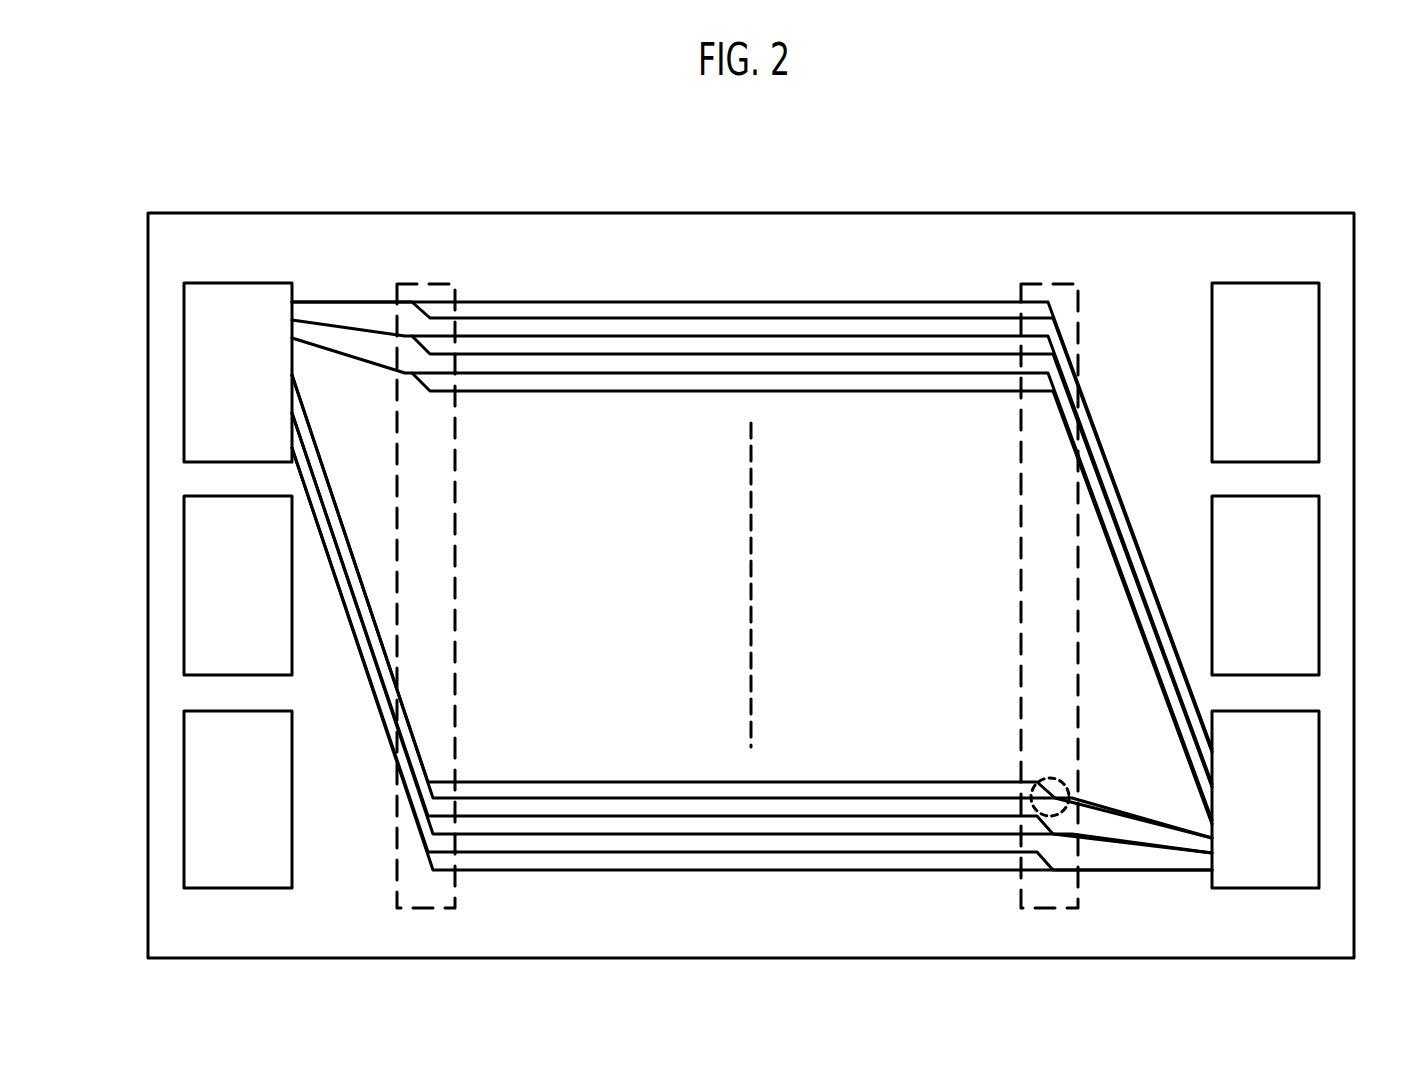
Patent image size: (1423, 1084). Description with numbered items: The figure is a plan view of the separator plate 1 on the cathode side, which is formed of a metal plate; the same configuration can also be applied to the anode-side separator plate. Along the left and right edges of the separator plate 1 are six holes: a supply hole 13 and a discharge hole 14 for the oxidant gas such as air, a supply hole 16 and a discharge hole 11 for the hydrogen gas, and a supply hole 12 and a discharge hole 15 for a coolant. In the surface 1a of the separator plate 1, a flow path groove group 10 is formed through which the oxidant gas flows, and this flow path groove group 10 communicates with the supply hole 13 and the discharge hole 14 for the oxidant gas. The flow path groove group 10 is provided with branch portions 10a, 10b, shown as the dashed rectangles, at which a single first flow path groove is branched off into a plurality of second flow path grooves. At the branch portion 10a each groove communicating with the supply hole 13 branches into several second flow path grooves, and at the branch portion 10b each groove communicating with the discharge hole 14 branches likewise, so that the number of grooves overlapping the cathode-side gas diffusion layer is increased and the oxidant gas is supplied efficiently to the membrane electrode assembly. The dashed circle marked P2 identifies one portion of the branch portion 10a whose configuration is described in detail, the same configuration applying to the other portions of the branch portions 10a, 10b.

The separator plate 1 is at (1283, 213).
The surface 1a is at (727, 599).
The flow path groove group 10 is at (862, 280).
The branch portion 10a is at (1048, 284).
The branch portion 10b is at (433, 285).
The discharge hole 11 is at (1319, 353).
The supply hole 12 is at (1320, 566).
The supply hole 13 is at (1320, 778).
The discharge hole 14 is at (185, 353).
The discharge hole 15 is at (185, 567).
The supply hole 16 is at (185, 780).
The portion of the branch portion P2 is at (1063, 782).